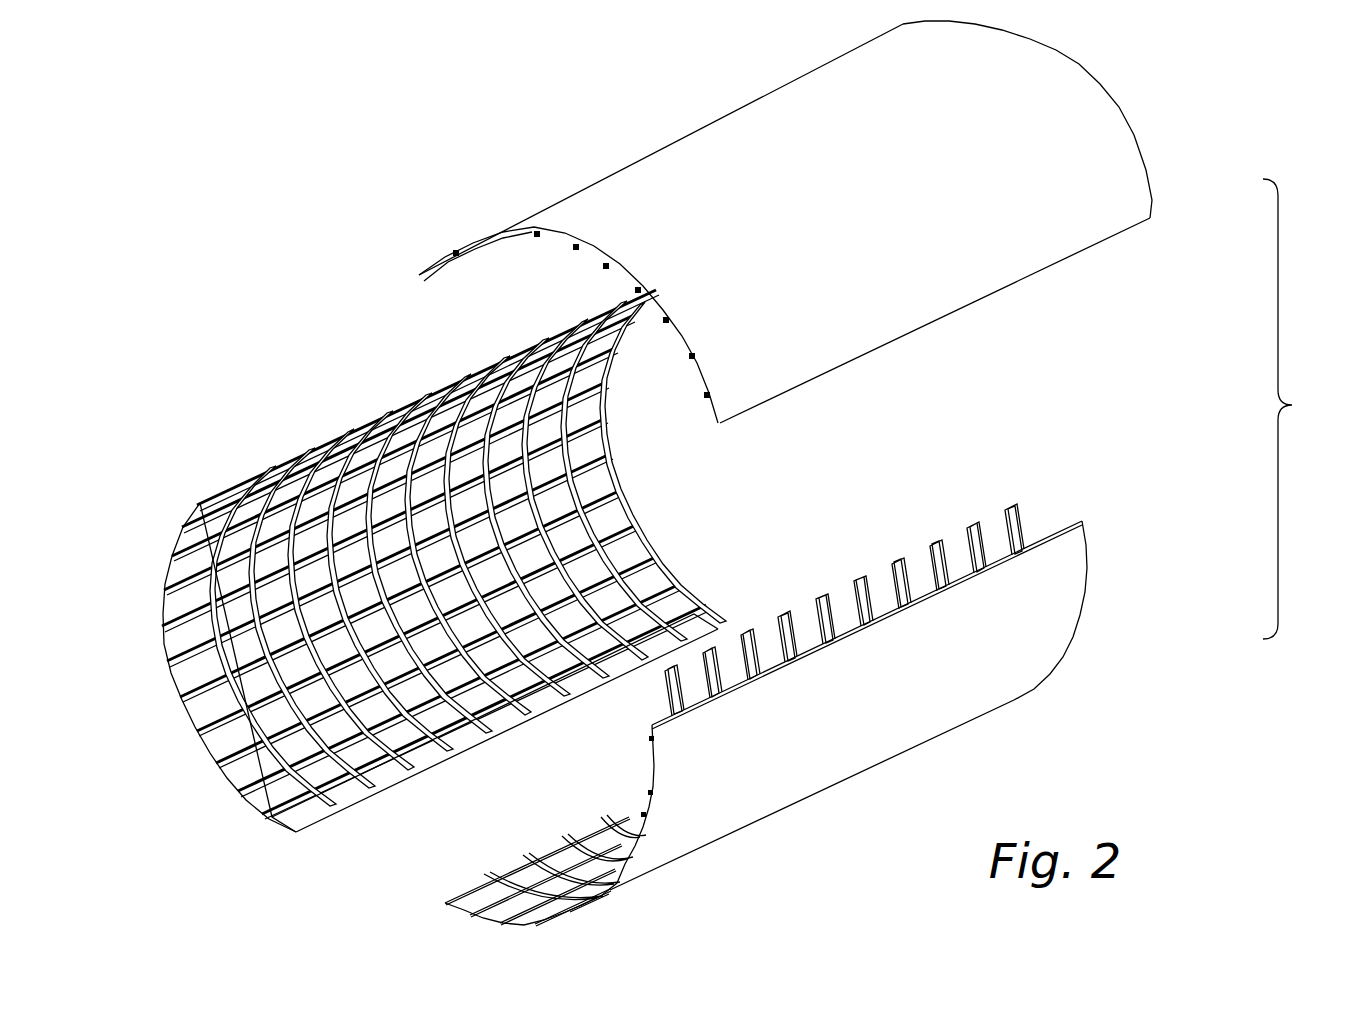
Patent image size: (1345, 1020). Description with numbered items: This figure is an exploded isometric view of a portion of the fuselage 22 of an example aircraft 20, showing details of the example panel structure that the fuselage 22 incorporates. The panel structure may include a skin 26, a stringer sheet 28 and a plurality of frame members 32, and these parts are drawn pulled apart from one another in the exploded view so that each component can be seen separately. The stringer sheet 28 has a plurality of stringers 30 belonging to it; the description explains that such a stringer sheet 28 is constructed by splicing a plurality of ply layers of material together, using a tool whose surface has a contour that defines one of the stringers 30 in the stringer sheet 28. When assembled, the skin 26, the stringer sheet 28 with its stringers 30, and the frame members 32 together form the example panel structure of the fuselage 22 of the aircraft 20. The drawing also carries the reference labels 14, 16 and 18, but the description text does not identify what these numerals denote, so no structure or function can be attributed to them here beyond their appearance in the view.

The lattice support structure 14 is at (458, 606).
The end ring 16 is at (210, 733).
The end of longitudinal rail 18 is at (306, 823).
The aircraft 20 is at (347, 818).
The fuselage 22 is at (855, 473).
The skin 26 is at (788, 354).
The stringer sheet 28 is at (617, 540).
The stringers 30 is at (605, 402).
The frame members 32 is at (650, 571).